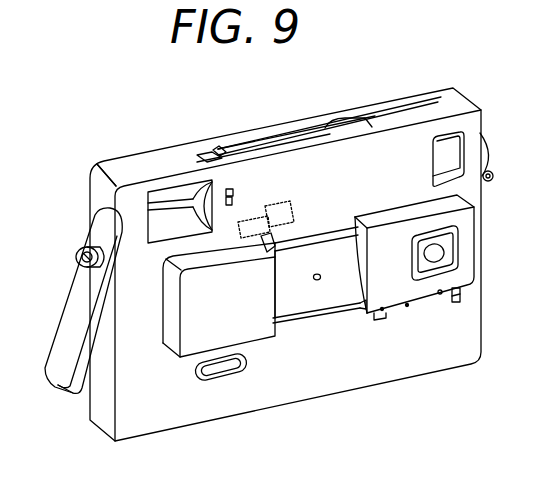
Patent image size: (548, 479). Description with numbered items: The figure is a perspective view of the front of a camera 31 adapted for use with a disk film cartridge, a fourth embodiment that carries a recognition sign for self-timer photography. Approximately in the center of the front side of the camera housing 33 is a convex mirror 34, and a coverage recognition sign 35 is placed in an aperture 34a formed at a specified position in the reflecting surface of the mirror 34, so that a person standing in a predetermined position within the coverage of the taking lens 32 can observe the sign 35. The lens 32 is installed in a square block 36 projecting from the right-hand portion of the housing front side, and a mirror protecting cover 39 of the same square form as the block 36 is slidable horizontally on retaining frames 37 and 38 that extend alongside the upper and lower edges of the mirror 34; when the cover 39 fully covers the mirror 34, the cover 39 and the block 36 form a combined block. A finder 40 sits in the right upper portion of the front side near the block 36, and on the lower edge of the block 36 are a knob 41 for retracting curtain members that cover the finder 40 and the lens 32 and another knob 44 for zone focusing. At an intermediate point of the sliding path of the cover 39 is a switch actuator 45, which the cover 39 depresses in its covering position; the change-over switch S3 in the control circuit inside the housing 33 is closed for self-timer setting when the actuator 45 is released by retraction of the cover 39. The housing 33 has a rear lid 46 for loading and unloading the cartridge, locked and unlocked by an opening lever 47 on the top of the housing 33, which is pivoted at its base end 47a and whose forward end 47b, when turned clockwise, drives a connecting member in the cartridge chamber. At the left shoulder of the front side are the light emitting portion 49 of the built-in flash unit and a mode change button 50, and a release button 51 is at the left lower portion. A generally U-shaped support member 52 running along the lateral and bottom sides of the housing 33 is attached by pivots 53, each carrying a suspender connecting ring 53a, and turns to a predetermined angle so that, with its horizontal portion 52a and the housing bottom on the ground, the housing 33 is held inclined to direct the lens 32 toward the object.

The camera 31 is at (143, 152).
The taking lens 32 is at (441, 255).
The camera housing 33 is at (118, 172).
The convex mirror 34 is at (321, 302).
The aperture 34a is at (365, 258).
The coverage recognition sign 35 is at (315, 280).
The square block 36 is at (469, 282).
The retaining frame 37 is at (338, 227).
The retaining frame 38 is at (351, 308).
The mirror protecting cover 39 is at (188, 312).
The finder 40 is at (446, 153).
The knob 41 is at (386, 318).
The knob 44 is at (456, 303).
The switch actuator 45 is at (268, 244).
The rear lid 46 is at (403, 103).
The opening lever 47 is at (273, 141).
The base end 47a is at (344, 123).
The forward end 47b is at (217, 153).
The light emitting portion 49 is at (190, 192).
The mode change button 50 is at (235, 193).
The change-over switch S3 is at (292, 210).
The release button 51 is at (213, 373).
The support member 52 is at (70, 328).
The horizontal portion 52a is at (83, 387).
The pivot 53 is at (496, 168).
The suspender connecting ring 53a is at (488, 183).